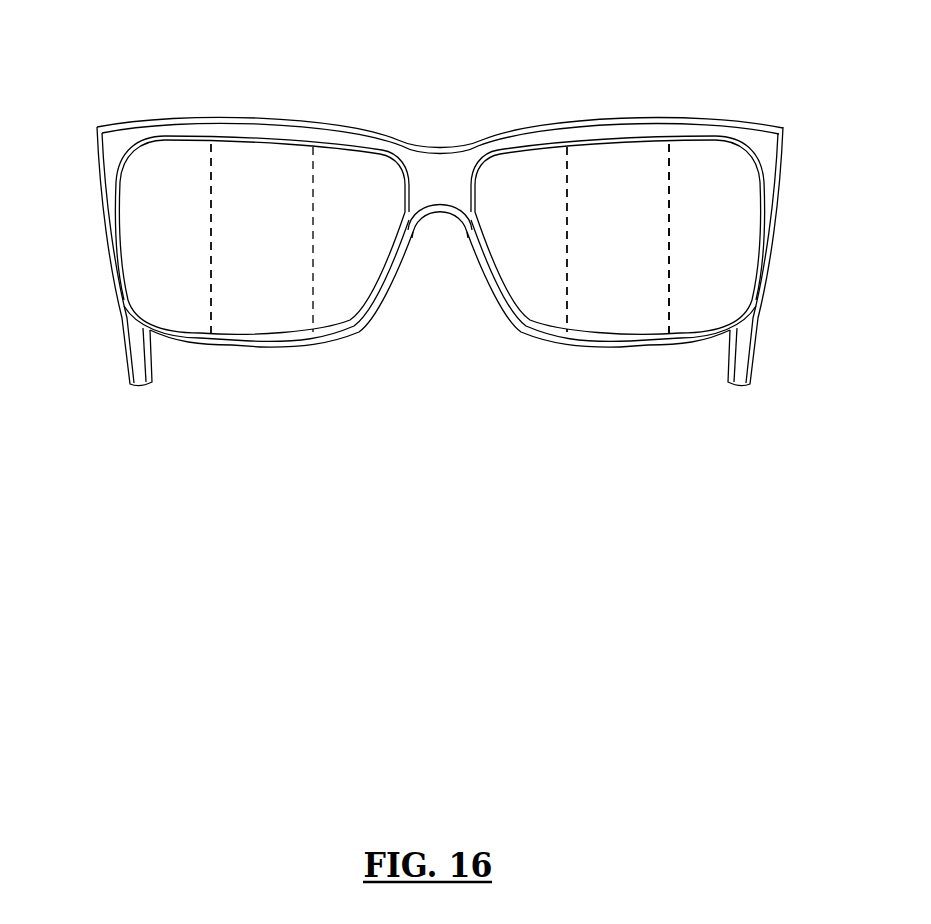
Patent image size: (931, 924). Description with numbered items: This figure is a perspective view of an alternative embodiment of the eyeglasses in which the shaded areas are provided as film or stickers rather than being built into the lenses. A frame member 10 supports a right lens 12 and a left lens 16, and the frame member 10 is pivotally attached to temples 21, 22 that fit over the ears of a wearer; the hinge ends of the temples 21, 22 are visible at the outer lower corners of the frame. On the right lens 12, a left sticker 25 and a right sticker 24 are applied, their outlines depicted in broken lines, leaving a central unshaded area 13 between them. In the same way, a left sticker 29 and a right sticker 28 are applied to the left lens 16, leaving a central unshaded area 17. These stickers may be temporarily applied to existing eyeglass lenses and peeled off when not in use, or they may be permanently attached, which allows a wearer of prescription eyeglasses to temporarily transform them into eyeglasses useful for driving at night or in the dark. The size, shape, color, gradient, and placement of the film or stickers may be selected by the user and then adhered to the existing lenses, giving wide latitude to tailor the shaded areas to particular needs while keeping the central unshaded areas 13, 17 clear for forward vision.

The frame member 10 is at (342, 140).
The right lens 12 is at (273, 93).
The central unshaded area 13 is at (255, 326).
The left lens 16 is at (625, 93).
The central unshaded area 17 is at (617, 318).
The temple 21 is at (133, 343).
The temple 22 is at (743, 362).
The right sticker 24 is at (183, 318).
The left sticker 25 is at (333, 297).
The right sticker 28 is at (520, 180).
The left sticker 29 is at (712, 152).